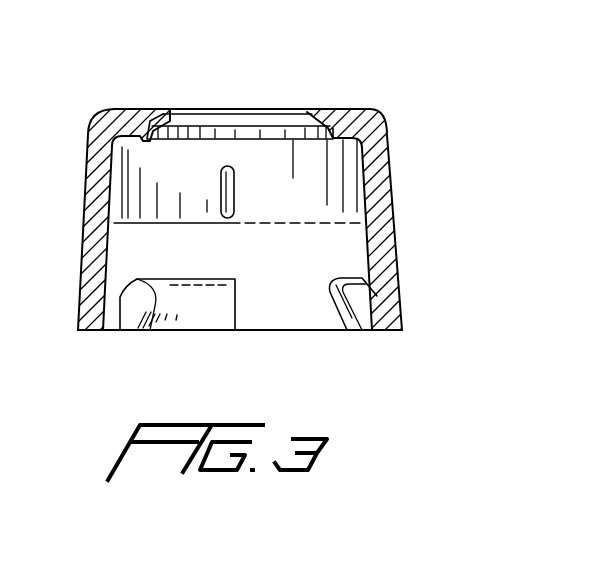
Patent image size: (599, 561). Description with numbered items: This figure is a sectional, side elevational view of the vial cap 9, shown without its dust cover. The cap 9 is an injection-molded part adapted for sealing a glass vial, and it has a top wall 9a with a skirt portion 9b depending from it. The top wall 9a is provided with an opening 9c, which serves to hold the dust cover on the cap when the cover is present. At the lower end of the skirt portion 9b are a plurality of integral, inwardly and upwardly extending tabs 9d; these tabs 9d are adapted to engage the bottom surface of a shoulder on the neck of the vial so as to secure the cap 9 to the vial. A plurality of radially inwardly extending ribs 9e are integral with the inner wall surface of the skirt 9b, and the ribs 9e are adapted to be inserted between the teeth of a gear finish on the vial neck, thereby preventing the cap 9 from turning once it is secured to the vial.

The vial cap 9 is at (72, 191).
The top wall 9a is at (122, 112).
The skirt portion 9b is at (390, 177).
The opening 9c is at (262, 110).
The tabs 9d is at (152, 330).
The ribs 9e is at (236, 190).